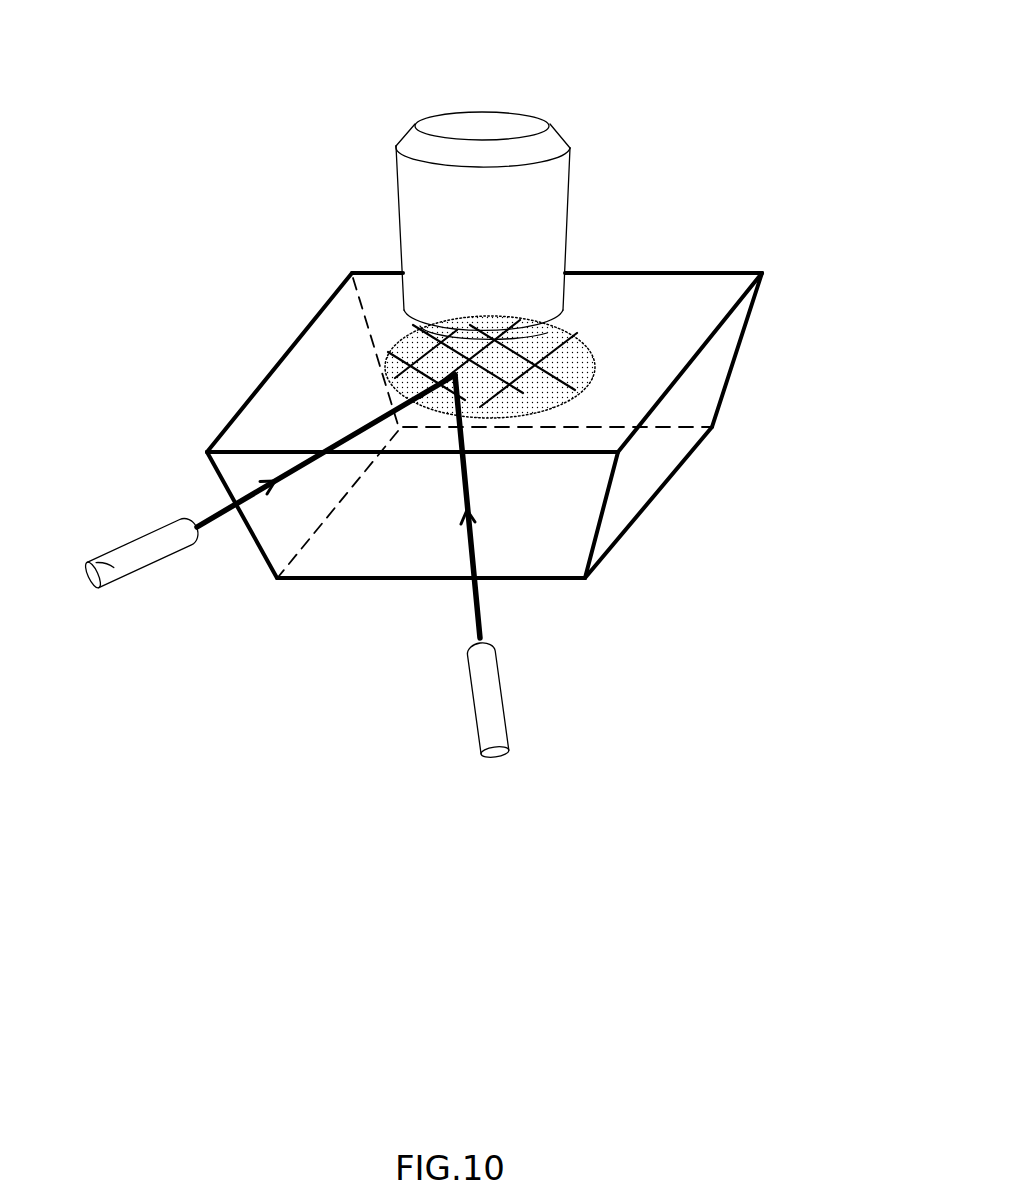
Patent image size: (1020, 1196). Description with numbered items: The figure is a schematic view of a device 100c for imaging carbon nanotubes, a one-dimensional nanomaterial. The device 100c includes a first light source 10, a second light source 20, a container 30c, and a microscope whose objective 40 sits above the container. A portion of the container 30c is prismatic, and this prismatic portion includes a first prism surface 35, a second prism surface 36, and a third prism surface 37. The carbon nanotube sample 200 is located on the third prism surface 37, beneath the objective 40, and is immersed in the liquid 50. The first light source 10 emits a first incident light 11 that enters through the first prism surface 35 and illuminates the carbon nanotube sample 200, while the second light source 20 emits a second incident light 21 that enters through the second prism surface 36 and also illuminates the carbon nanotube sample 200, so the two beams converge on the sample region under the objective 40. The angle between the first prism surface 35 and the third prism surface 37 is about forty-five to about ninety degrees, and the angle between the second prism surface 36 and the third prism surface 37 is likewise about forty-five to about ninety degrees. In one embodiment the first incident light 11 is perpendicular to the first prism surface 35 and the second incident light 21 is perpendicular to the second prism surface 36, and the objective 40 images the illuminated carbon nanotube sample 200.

The device 100c is at (606, 91).
The container 30c is at (740, 347).
The third prism surface 37 is at (355, 367).
The first prism surface 35 is at (330, 432).
The second prism surface 36 is at (483, 533).
The liquid 50 is at (507, 372).
The carbon nanotube sample 200 is at (487, 377).
The objective 40 is at (455, 212).
The first light source 10 is at (95, 587).
The first incident light 11 is at (222, 508).
The second light source 20 is at (487, 710).
The second incident light 21 is at (483, 625).